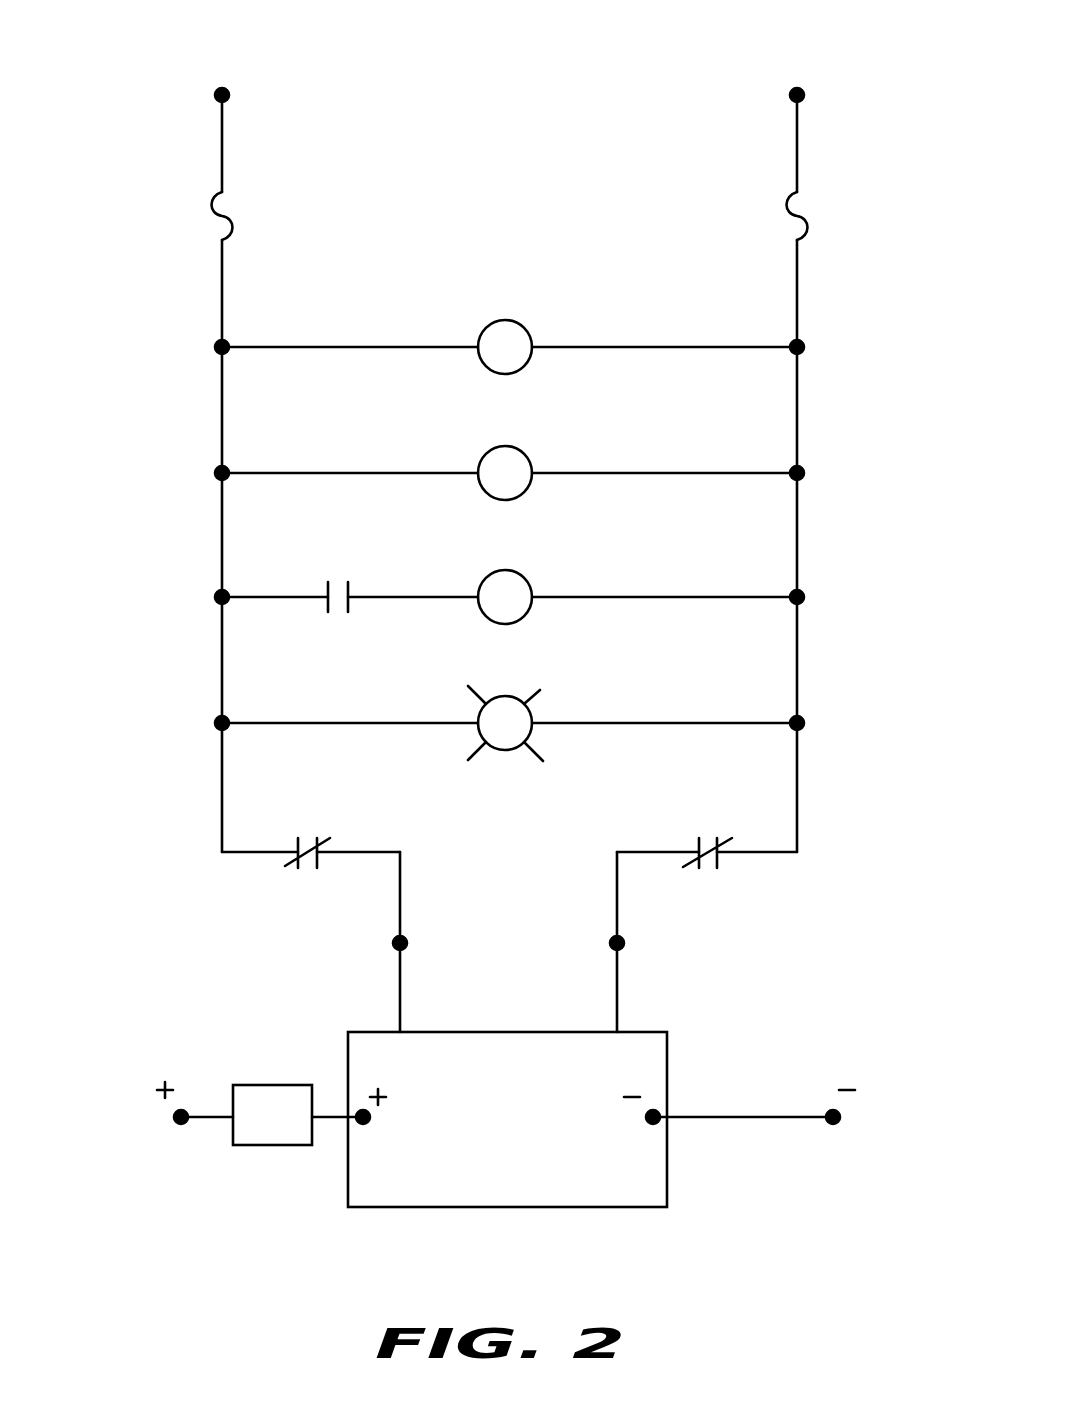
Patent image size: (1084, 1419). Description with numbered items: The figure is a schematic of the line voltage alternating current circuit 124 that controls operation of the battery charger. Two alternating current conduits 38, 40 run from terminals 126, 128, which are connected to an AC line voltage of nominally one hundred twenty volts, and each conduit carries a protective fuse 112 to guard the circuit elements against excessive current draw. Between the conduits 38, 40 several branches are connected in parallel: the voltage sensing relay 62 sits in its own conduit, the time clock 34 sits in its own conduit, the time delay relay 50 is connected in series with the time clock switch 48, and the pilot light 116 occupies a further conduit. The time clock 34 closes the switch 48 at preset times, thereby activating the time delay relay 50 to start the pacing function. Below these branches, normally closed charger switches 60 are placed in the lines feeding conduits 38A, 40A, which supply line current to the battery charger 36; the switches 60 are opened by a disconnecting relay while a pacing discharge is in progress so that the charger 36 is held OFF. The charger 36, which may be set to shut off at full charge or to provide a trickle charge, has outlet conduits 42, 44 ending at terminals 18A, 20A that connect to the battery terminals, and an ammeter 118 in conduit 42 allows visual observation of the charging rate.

The line voltage circuit 124 is at (478, 92).
The terminal 126 is at (216, 95).
The terminal 128 is at (803, 95).
The alternating current conduit 38 is at (223, 152).
The alternating current conduit 40 is at (795, 138).
The protective fuse 112 is at (215, 205).
The voltage sensing relay 62 is at (512, 322).
The time clock 34 is at (498, 448).
The time clock switch 48 is at (325, 586).
The time delay relay 50 is at (518, 580).
The pilot light 116 is at (530, 710).
The charger switch 60 is at (292, 865).
The conduit 38A is at (402, 885).
The conduit 40A is at (615, 905).
The battery charger 36 is at (514, 1148).
The ammeter 118 is at (285, 1085).
The conduit 42 is at (208, 1118).
The conduit 44 is at (718, 1118).
The terminal 18A is at (178, 1118).
The terminal 20A is at (840, 1120).